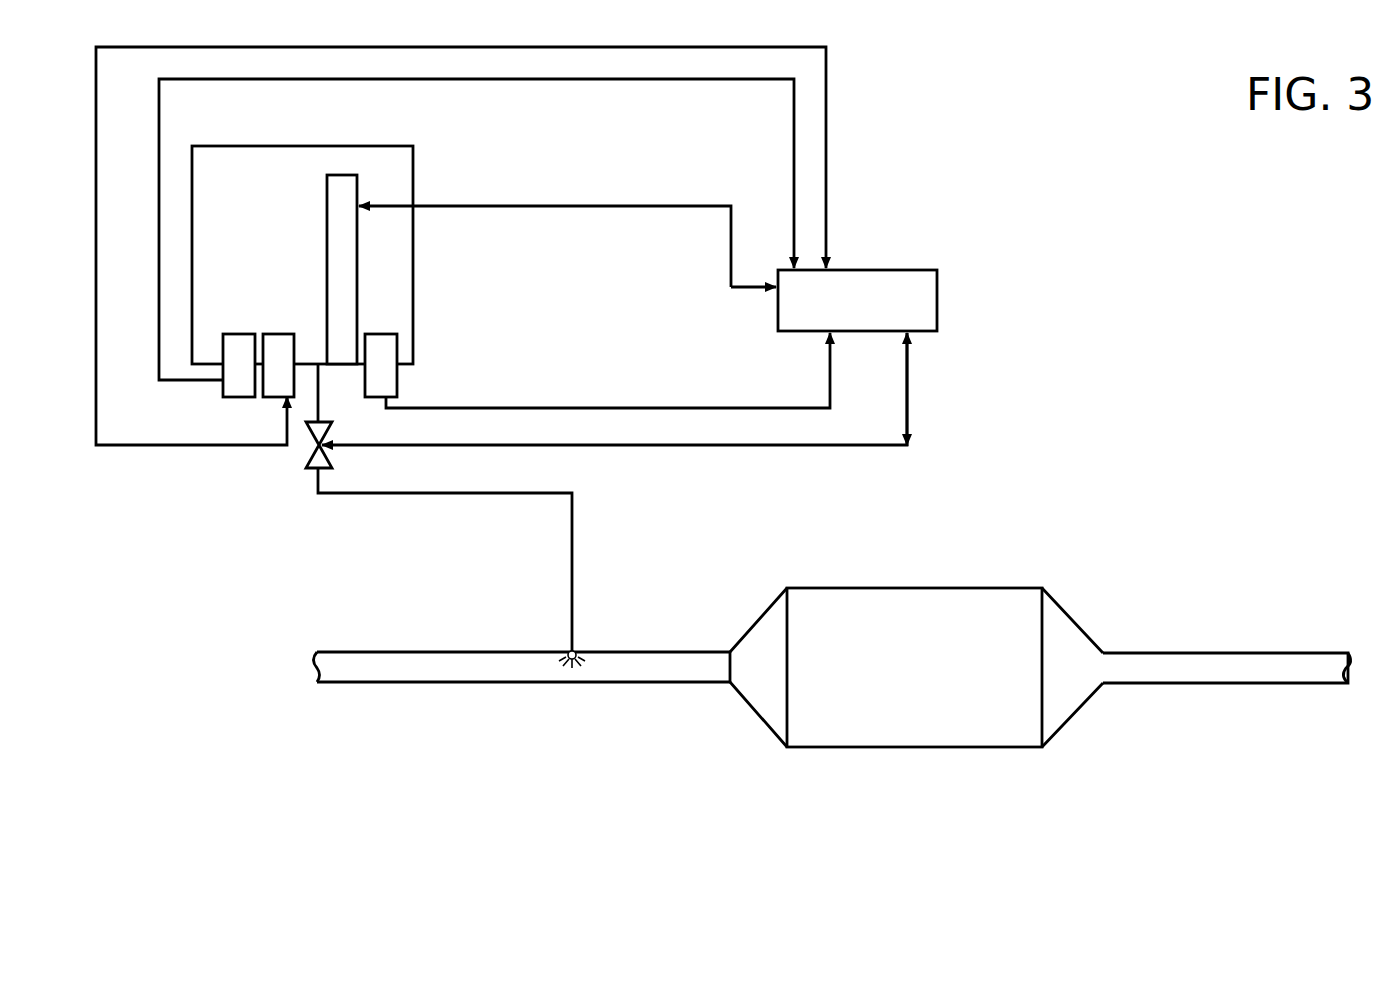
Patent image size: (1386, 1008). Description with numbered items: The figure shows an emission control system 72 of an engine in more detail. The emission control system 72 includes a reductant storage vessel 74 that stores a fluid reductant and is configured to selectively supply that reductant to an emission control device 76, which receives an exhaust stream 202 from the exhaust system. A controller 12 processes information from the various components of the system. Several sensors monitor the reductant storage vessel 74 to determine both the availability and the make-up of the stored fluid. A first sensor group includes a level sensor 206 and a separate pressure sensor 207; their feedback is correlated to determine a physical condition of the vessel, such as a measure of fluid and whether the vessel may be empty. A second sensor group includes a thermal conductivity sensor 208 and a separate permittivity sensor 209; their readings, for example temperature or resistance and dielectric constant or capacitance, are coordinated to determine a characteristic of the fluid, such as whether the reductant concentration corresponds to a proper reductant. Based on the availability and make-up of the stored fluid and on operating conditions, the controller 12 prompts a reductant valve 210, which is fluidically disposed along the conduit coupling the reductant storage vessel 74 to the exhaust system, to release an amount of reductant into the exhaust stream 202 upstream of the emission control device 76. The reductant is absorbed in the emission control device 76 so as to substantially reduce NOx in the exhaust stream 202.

The controller 12 is at (858, 270).
The emission control system 72 is at (1146, 276).
The reductant storage vessel 74 is at (300, 146).
The emission control device 76 is at (915, 748).
The exhaust stream 202 is at (398, 650).
The level sensor 206 is at (327, 232).
The pressure sensor 207 is at (399, 396).
The thermal conductivity sensor 208 is at (238, 398).
The permittivity sensor 209 is at (280, 334).
The reductant valve 210 is at (306, 466).